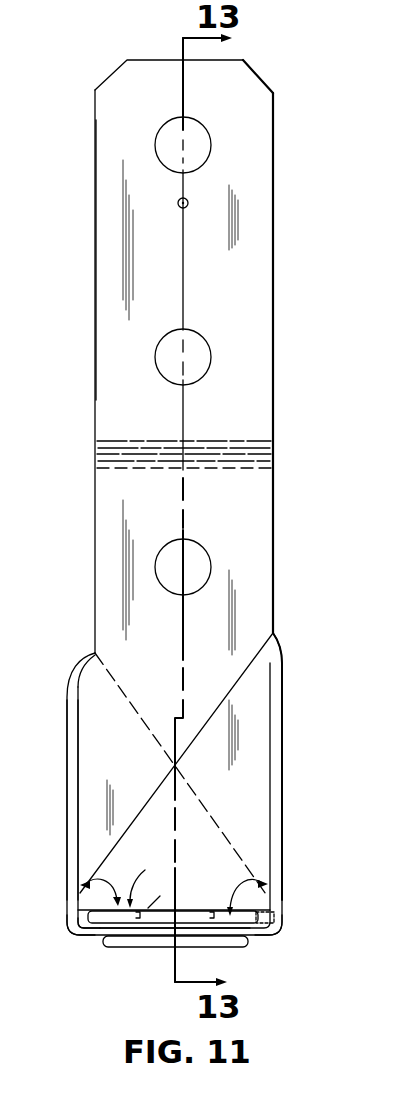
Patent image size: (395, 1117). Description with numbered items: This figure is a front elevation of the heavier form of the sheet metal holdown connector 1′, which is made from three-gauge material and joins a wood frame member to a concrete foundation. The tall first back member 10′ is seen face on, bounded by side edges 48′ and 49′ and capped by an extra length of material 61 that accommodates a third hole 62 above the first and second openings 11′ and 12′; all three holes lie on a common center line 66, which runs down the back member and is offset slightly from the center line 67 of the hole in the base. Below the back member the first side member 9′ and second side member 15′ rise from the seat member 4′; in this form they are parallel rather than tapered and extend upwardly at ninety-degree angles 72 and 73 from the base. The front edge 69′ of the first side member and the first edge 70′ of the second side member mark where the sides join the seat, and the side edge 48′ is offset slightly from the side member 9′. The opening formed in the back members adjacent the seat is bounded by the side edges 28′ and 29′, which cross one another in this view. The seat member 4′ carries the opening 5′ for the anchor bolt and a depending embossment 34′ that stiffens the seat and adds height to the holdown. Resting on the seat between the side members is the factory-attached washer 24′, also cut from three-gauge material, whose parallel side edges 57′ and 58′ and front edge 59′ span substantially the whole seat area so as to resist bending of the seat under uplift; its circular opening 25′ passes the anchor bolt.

The holdown connector 1′ is at (90, 326).
The extra length of material 61 is at (273, 112).
The third hole 62 is at (206, 152).
The side edge 48′ is at (95, 245).
The side edge 49′ is at (273, 232).
The center line of the three holes 66 is at (183, 290).
The second opening 12′ is at (200, 345).
The first back member 10′ is at (250, 404).
The first opening 11′ is at (200, 554).
The first edge of second side member 70′ is at (277, 715).
The second side member 15′ is at (282, 755).
The front edge of first side member 69′ is at (76, 772).
The first side member 9′ is at (66, 797).
The side edge 28′ is at (156, 790).
The side edge 29′ is at (200, 800).
The angle 72 is at (118, 898).
The angle 73 is at (273, 860).
The washer 24′ is at (150, 883).
The circular opening of washer 25′ is at (160, 896).
The center line of the hole in the base 67 is at (178, 904).
The front edge of washer 59′ is at (255, 937).
The washer edge 57′ is at (92, 935).
The washer edge 58′ is at (254, 934).
The seat member 4′ is at (92, 937).
The opening in seat member 5′ is at (152, 948).
The embossment 34′ is at (197, 940).